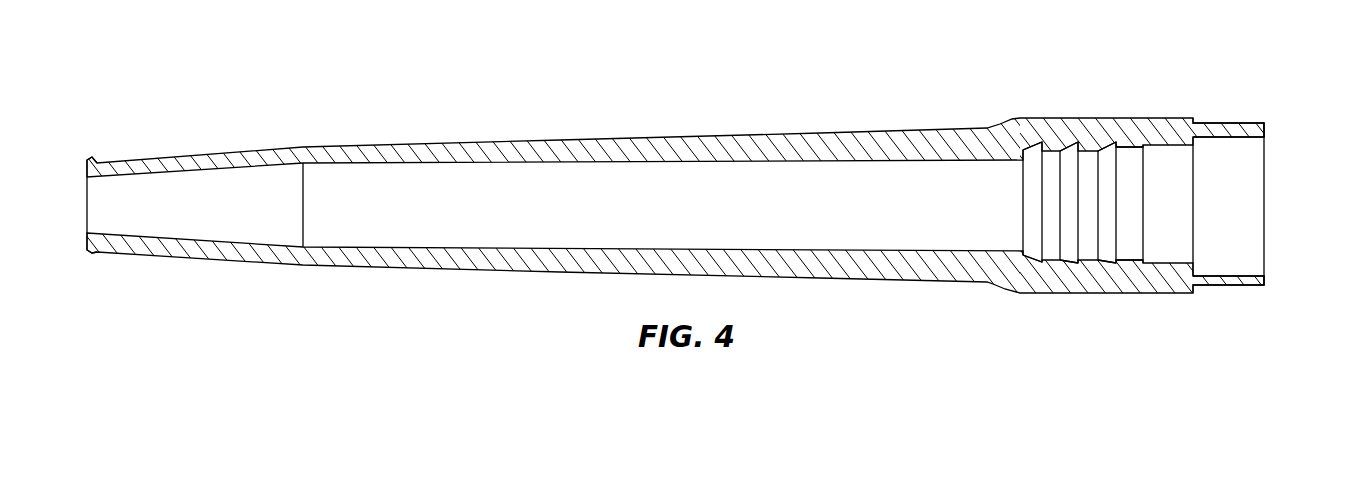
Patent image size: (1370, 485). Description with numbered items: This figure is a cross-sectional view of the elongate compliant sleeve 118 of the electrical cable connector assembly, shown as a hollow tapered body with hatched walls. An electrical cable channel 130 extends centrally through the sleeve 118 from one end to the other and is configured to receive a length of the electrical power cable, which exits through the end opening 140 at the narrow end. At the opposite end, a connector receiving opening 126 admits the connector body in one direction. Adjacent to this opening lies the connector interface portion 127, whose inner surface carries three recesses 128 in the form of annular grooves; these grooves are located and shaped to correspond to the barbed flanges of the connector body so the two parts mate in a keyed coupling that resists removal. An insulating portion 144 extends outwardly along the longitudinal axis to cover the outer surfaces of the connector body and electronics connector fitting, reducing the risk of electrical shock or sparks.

The elongate compliant sleeve 118 is at (427, 38).
The electrical cable channel 130 is at (692, 180).
The end opening 140 is at (87, 192).
The recesses 128 is at (1027, 258).
The connector interface portion 127 is at (1122, 160).
The insulating portion 144 is at (1230, 123).
The connector receiving opening 126 is at (1284, 188).